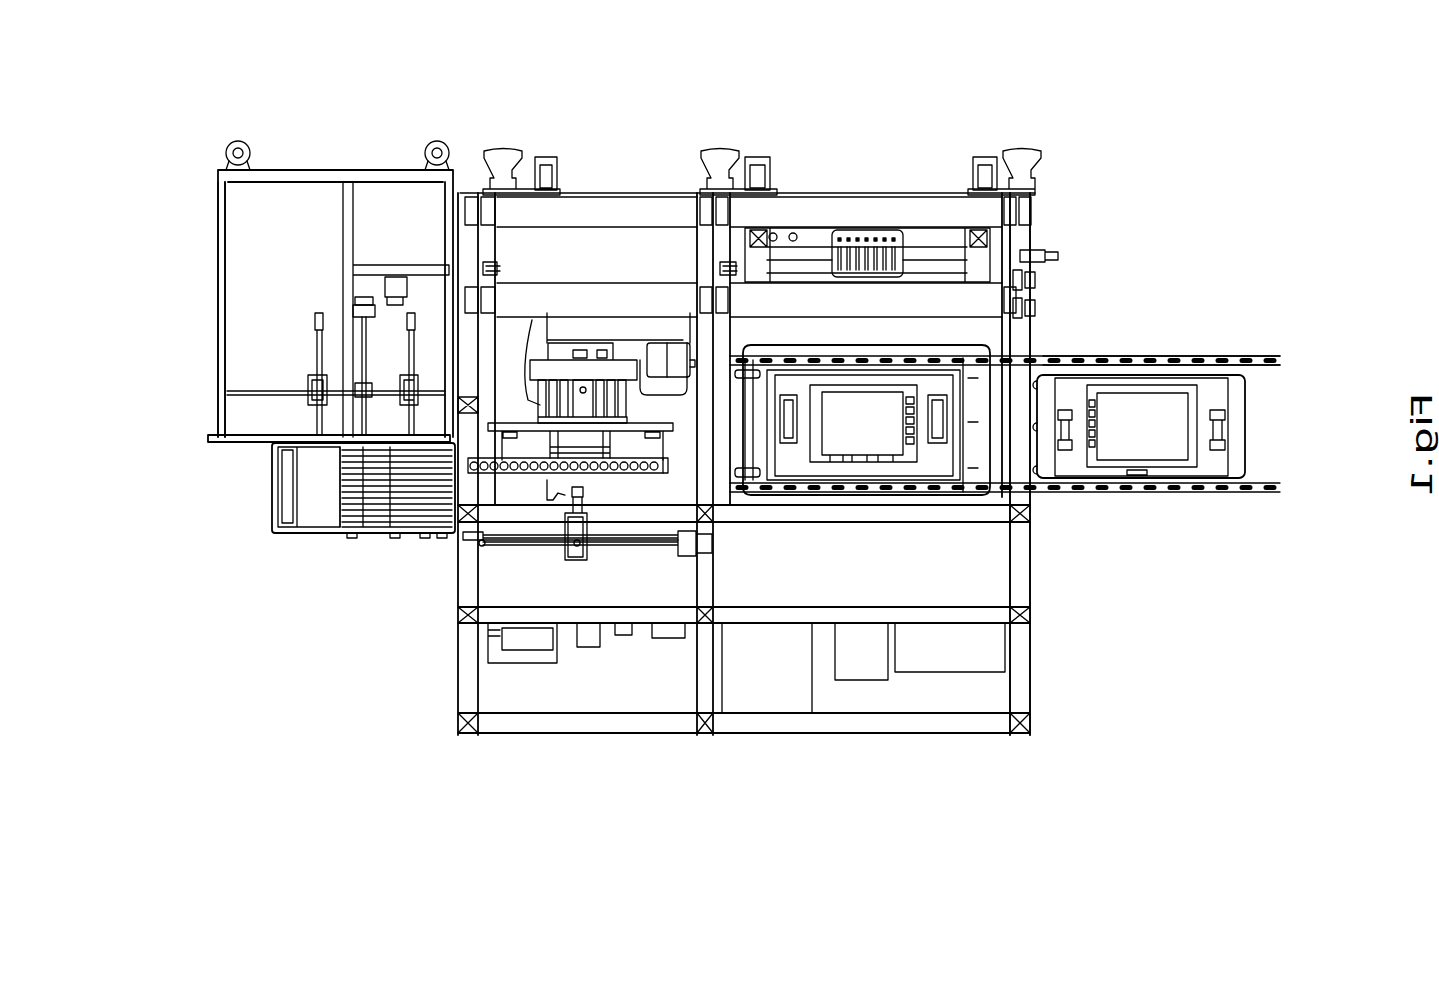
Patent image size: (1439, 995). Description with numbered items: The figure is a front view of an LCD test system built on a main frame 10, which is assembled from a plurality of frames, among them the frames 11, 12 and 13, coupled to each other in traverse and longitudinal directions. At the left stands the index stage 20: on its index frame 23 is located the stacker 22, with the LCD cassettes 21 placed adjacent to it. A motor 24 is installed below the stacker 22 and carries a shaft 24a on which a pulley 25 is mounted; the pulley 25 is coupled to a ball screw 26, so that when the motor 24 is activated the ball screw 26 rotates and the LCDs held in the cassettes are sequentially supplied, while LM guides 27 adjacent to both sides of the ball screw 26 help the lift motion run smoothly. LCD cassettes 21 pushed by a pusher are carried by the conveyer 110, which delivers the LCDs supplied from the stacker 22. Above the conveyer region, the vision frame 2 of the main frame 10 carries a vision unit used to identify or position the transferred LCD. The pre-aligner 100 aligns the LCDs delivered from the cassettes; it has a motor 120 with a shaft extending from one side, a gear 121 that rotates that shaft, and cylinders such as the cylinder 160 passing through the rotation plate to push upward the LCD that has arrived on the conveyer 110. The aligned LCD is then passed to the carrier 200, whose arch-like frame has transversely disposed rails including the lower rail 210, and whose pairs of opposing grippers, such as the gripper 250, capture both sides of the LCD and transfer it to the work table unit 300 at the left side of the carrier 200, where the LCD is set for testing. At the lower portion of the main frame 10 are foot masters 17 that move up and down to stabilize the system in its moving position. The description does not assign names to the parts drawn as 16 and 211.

The vision frame 2 is at (610, 547).
The main frame 10 is at (1040, 690).
The frame 11 is at (610, 200).
The frame 12 is at (1025, 558).
The frame 13 is at (773, 513).
The indicator lamp 16 is at (755, 157).
The foot master 17 is at (1023, 160).
The index stage 20 is at (247, 487).
The LCD cassette 21 is at (363, 527).
The stacker 22 is at (420, 537).
The index frame 23 is at (218, 320).
The motor 24 is at (392, 283).
The shaft 24a is at (372, 297).
The pulley 25 is at (357, 325).
The ball screw 26 is at (360, 327).
The LM guide 27 is at (315, 352).
The pre-aligner 100 is at (650, 487).
The conveyer 110 is at (488, 540).
The motor 120 is at (677, 353).
The gear 121 is at (638, 353).
The cylinder 160 is at (527, 353).
The carrier 200 is at (565, 343).
The lower rail 210 is at (1127, 497).
The conveyor rail 211 is at (1060, 357).
The gripper 250 is at (963, 440).
The work table unit 300 is at (883, 500).